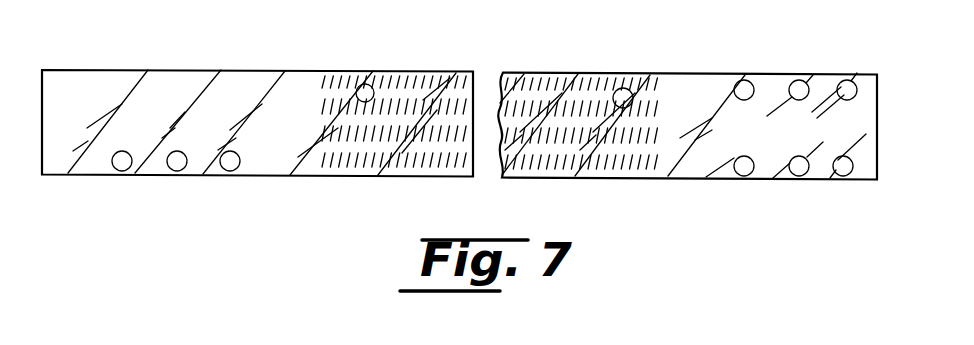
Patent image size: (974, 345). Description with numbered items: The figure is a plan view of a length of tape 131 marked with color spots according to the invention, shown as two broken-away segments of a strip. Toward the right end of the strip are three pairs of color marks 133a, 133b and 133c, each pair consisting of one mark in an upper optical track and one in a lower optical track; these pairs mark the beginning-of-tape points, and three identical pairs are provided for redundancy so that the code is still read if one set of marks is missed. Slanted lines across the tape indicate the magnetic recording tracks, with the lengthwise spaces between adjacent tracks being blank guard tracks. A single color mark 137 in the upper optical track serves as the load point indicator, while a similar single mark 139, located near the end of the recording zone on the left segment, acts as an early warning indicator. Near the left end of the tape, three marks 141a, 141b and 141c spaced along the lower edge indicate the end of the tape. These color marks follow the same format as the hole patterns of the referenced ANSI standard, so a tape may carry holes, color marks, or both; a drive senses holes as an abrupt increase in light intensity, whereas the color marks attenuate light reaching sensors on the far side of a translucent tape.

The tape 131 is at (250, 72).
The early warning indicator mark 139 is at (367, 85).
The load point indicator mark 137 is at (626, 89).
The end of tape mark 141a is at (230, 171).
The end of tape mark 141b is at (178, 171).
The end of tape mark 141c is at (122, 171).
The pair of color marks 133a is at (851, 161).
The pair of color marks 133b is at (799, 100).
The pair of color marks 133c is at (744, 100).